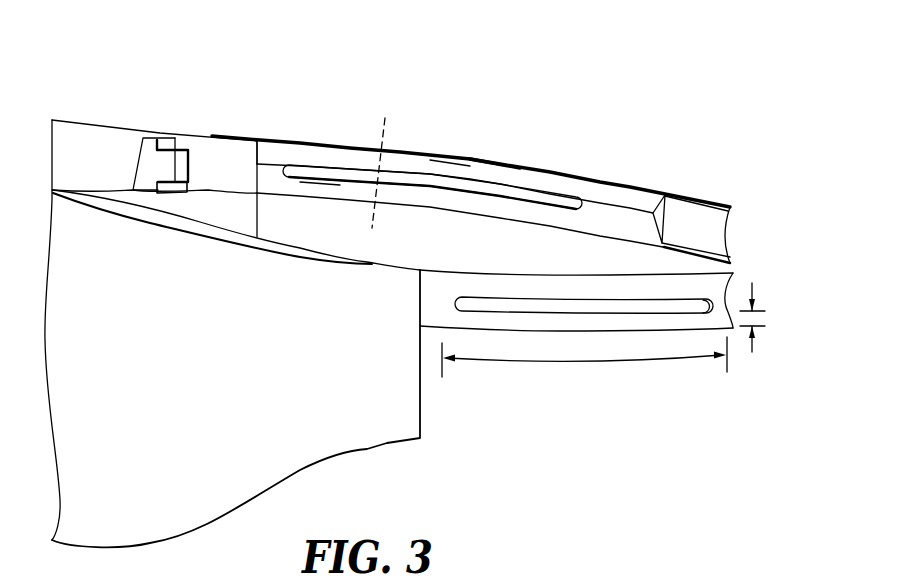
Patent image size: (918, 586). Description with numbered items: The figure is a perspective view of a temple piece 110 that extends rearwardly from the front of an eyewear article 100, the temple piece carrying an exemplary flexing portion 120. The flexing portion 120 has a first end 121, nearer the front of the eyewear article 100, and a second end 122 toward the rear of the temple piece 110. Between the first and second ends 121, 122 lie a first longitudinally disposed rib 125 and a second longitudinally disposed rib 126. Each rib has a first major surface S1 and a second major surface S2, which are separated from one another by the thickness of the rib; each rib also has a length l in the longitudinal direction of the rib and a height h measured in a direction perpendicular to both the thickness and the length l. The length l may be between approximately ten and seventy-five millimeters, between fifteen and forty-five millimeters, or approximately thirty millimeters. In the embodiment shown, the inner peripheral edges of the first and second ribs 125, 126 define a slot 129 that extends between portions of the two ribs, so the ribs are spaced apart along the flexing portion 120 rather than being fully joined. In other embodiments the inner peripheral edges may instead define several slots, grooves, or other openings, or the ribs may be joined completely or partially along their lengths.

The eyewear article 100 is at (162, 76).
The temple piece 110 is at (503, 144).
The flexing portion 120 is at (405, 142).
The first end 121 is at (264, 153).
The second end 122 is at (652, 207).
The first longitudinally disposed rib 125 is at (329, 153).
The second longitudinally disposed rib 126 is at (333, 191).
The slot 129 is at (593, 305).
The first major surface S1 is at (429, 168).
The second major surface S2 is at (488, 161).
The height h is at (751, 319).
The length l is at (560, 363).